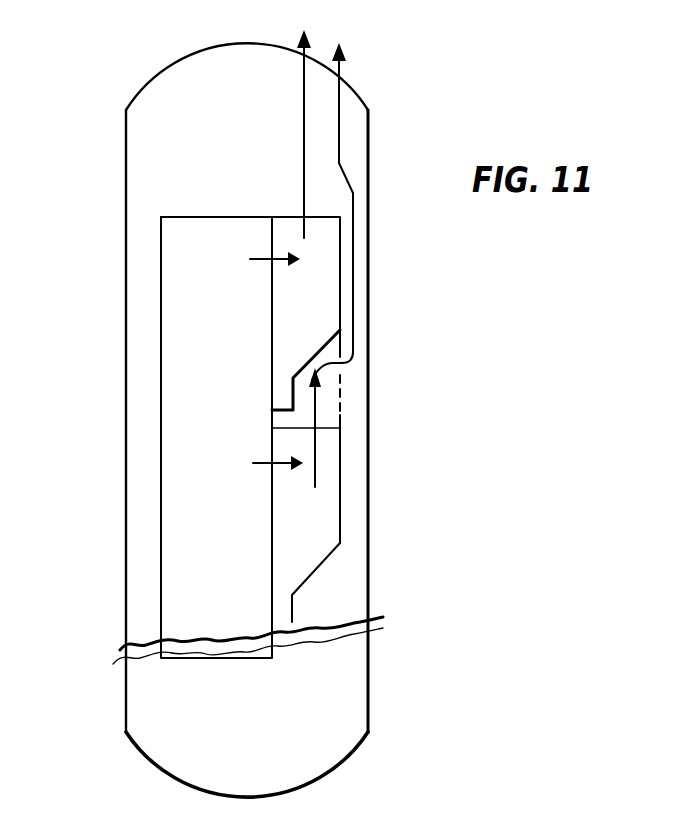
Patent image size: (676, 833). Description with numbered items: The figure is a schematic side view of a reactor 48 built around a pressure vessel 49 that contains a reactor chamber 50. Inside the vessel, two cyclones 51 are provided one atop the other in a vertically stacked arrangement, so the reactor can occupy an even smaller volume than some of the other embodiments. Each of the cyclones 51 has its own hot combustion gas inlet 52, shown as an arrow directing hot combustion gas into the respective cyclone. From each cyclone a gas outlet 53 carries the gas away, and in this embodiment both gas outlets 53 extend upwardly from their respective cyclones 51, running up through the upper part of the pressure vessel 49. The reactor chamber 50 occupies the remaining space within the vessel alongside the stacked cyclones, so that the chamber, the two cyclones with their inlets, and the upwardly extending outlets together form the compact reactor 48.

The reactor 48 is at (92, 134).
The pressure vessel 49 is at (126, 283).
The reactor chamber 50 is at (181, 370).
The cyclone 51 is at (318, 297).
The hot combustion gas inlet 52 is at (268, 458).
The gas outlet 53 is at (302, 145).